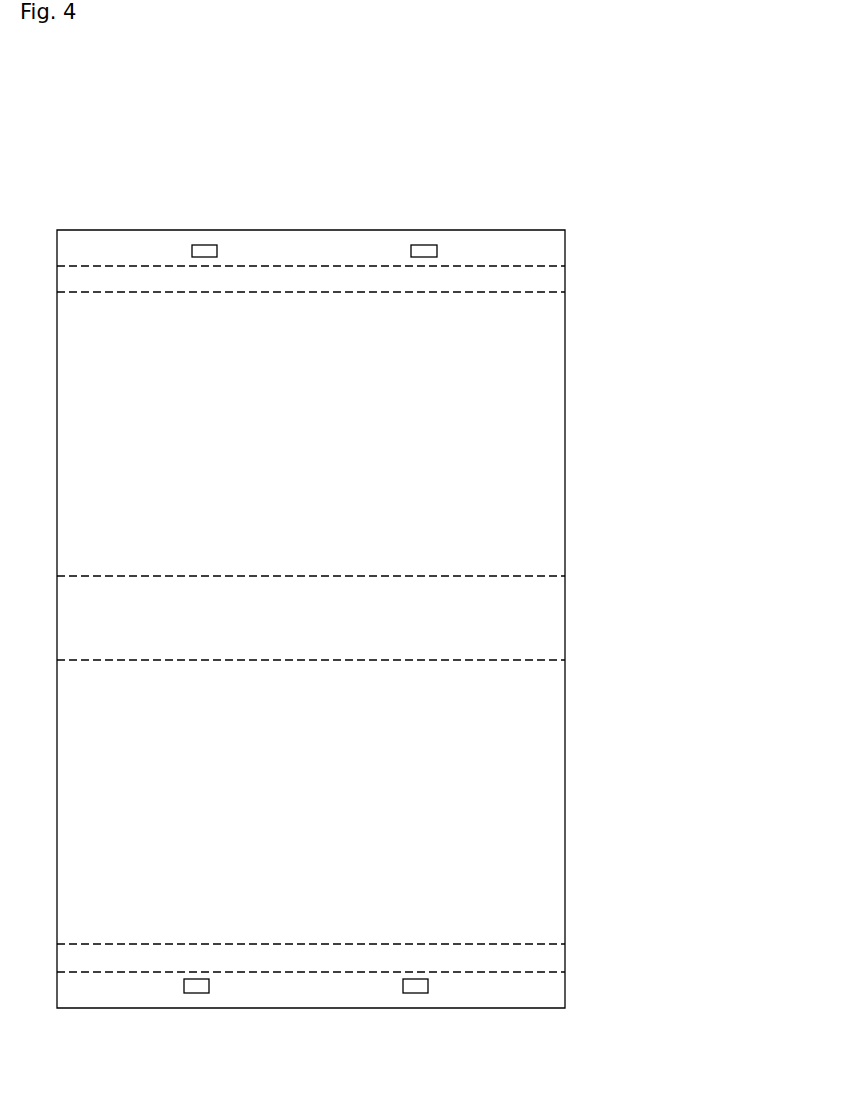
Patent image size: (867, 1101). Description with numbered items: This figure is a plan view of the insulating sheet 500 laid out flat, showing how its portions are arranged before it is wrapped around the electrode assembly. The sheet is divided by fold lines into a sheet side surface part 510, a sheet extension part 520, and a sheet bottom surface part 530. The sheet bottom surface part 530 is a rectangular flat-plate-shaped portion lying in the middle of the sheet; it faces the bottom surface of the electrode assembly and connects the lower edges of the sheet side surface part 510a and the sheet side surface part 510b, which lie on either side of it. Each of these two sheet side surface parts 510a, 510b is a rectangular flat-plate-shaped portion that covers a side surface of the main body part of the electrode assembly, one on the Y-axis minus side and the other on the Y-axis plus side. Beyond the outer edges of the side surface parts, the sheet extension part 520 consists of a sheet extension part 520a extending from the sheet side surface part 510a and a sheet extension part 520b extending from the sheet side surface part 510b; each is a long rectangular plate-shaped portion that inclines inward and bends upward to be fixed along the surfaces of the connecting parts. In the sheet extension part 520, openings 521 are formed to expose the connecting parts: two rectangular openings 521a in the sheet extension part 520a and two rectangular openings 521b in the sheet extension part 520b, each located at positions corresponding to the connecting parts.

The insulating sheet 500 is at (568, 143).
The sheet side surface part 510 is at (388, 618).
The sheet side surface part 510a is at (606, 660).
The sheet side surface part 510b is at (606, 292).
The sheet extension part 520 is at (391, 619).
The sheet extension part 520a is at (565, 944).
The sheet extension part 520b is at (565, 230).
The openings 521 is at (341, 619).
The openings 521a is at (197, 993).
The openings 521b is at (204, 245).
The sheet bottom surface part 530 is at (565, 576).